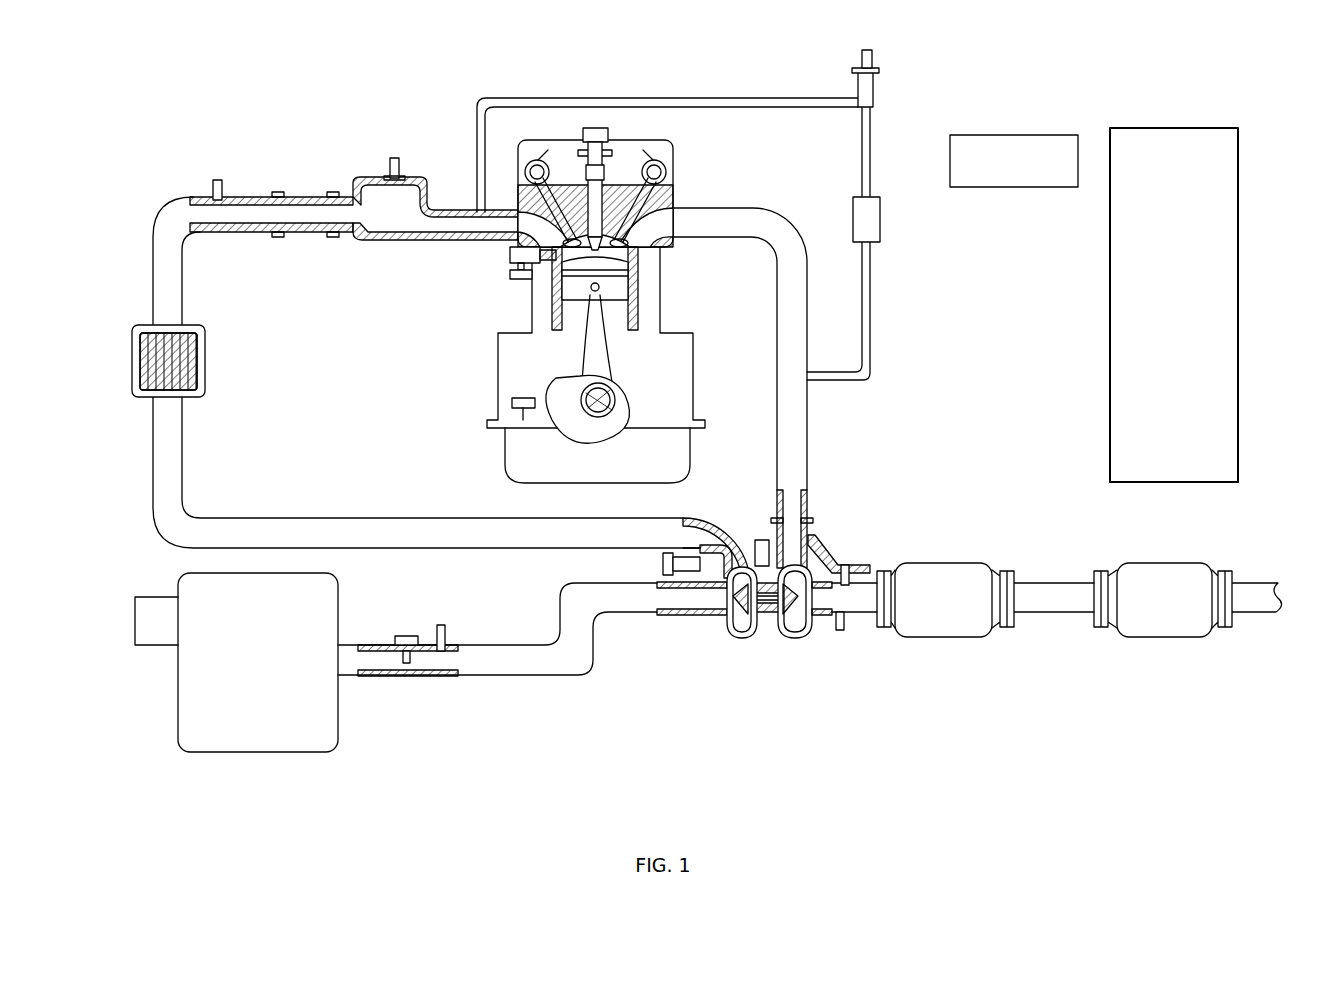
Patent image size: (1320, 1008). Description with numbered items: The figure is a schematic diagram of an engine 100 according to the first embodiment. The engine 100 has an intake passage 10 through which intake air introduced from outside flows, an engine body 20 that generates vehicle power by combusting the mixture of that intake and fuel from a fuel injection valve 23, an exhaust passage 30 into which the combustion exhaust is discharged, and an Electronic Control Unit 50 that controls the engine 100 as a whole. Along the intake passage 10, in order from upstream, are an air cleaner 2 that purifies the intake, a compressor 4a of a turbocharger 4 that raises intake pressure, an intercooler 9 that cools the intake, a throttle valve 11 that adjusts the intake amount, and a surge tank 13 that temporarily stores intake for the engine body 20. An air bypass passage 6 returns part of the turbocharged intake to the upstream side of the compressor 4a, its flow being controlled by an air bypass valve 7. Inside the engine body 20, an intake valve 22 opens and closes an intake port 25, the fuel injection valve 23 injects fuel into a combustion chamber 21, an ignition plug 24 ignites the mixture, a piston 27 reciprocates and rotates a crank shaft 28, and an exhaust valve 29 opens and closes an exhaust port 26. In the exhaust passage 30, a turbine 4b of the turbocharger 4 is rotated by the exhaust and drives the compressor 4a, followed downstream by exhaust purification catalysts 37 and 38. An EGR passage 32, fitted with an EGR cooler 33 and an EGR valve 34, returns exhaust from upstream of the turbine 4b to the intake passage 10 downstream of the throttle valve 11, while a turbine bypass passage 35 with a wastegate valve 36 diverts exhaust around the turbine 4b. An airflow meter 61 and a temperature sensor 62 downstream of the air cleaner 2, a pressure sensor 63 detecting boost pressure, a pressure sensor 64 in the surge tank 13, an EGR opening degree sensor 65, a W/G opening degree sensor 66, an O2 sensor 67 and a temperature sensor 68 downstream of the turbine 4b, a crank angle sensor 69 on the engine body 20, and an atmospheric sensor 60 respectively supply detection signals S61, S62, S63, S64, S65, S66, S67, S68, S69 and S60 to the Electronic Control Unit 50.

The engine 100 is at (288, 112).
The air cleaner 2 is at (340, 728).
The turbocharger 4 is at (734, 633).
The compressor 4a is at (742, 638).
The turbine 4b is at (795, 638).
The air bypass passage 6 is at (712, 598).
The air bypass valve 7 is at (662, 566).
The intercooler 9 is at (207, 375).
The intake passage 10 is at (522, 677).
The throttle valve 11 is at (258, 222).
The surge tank 13 is at (384, 228).
The engine body 20 is at (577, 298).
The combustion chamber 21 is at (560, 183).
The intake valve 22 is at (592, 215).
The fuel injection valve 23 is at (512, 276).
The ignition plug 24 is at (632, 262).
The intake port 25 is at (500, 237).
The exhaust port 26 is at (675, 235).
The piston 27 is at (628, 290).
The crank shaft 28 is at (625, 412).
The exhaust valve 29 is at (665, 198).
The exhaust passage 30 is at (775, 348).
The EGR passage 32 is at (862, 382).
The EGR cooler 33 is at (853, 222).
The EGR valve 34 is at (880, 90).
The turbine bypass passage 35 is at (822, 560).
The wastegate valve 36 is at (808, 525).
The exhaust purification catalyst 37 is at (940, 638).
The exhaust purification catalyst 38 is at (1168, 638).
The Electronic Control Unit 50 is at (1160, 128).
The atmospheric sensor 60 is at (1016, 135).
The airflow meter 61 is at (410, 660).
The temperature sensor 62 is at (446, 640).
The pressure sensor 63 is at (222, 192).
The pressure sensor 64 is at (388, 170).
The EGR opening degree sensor 65 is at (860, 62).
The W/G opening degree sensor 66 is at (757, 530).
The O2 sensor 67 is at (850, 572).
The temperature sensor 68 is at (848, 625).
The crank angle sensor 69 is at (517, 409).
The detection signal S60 is at (1108, 163).
The detection signal S61 is at (1108, 210).
The detection signal S62 is at (1108, 243).
The detection signal S63 is at (218, 180).
The detection signal S64 is at (394, 158).
The detection signal S65 is at (875, 62).
The detection signal S66 is at (762, 538).
The detection signal S67 is at (1108, 410).
The detection signal S68 is at (1108, 444).
The detection signal S69 is at (522, 398).